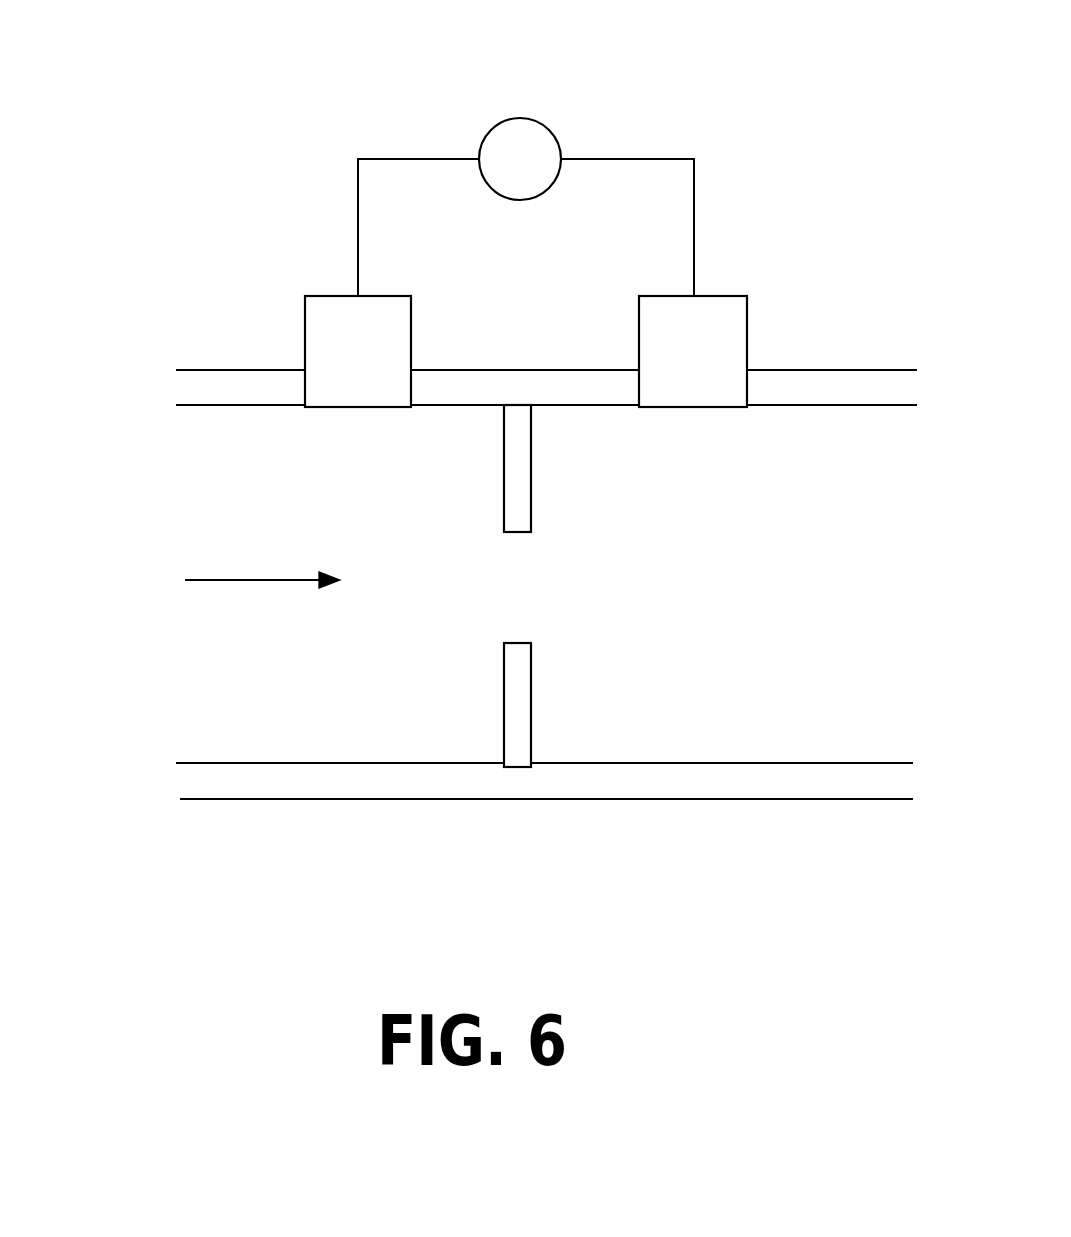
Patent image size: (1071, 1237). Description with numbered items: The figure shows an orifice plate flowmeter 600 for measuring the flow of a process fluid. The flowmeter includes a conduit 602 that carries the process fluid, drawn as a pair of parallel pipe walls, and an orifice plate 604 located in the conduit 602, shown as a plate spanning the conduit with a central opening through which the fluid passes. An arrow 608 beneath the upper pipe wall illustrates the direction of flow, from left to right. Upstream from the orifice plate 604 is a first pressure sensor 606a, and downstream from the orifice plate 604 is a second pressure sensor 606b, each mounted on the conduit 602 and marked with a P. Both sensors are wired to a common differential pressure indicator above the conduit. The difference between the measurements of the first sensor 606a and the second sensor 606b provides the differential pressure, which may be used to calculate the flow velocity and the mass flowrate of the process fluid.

The orifice plate flowmeter 600 is at (801, 56).
The conduit 602 is at (227, 370).
The orifice plate 604 is at (518, 490).
The first pressure sensor 606a is at (330, 296).
The second pressure sensor 606b is at (720, 296).
The arrow 608 is at (248, 580).